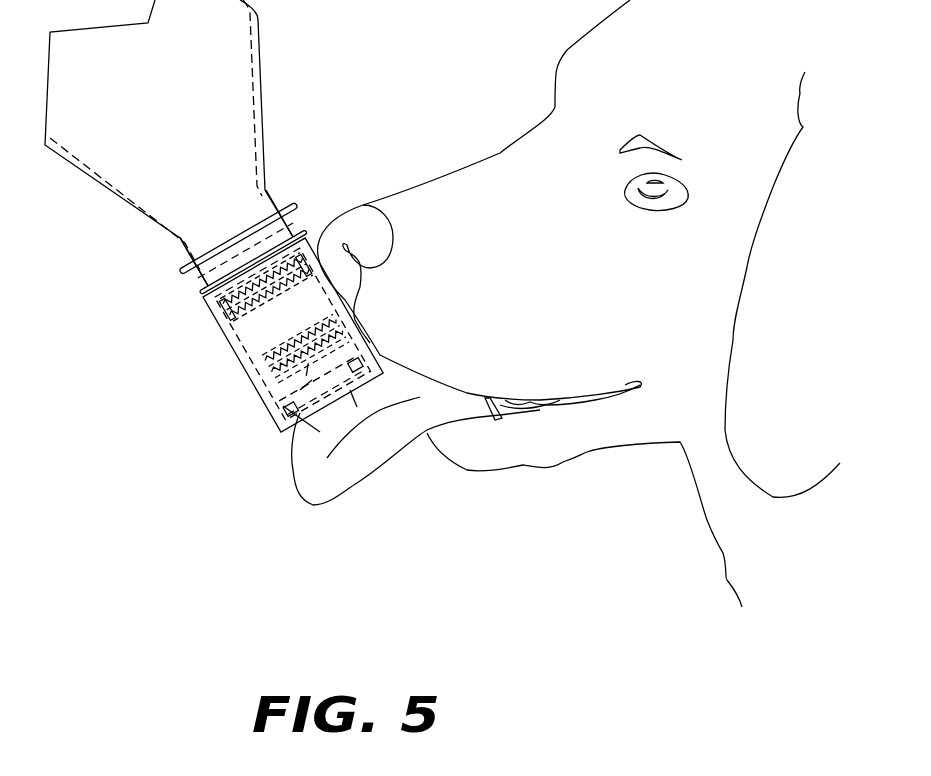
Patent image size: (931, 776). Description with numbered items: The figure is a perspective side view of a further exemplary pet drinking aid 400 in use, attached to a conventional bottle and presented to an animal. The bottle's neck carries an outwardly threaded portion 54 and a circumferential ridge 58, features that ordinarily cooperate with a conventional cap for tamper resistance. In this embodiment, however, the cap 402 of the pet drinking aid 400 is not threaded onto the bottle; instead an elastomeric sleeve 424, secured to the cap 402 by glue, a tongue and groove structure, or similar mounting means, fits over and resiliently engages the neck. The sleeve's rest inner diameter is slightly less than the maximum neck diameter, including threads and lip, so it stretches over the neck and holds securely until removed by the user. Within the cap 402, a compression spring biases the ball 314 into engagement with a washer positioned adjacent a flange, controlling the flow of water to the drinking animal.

The outwardly threaded portion 54 is at (215, 320).
The circumferential ridge 58 is at (305, 233).
The elastomeric sleeve 424 is at (320, 240).
The pet drinking aid 400 is at (373, 338).
The cap 402 is at (247, 382).
The ball 314 is at (267, 420).